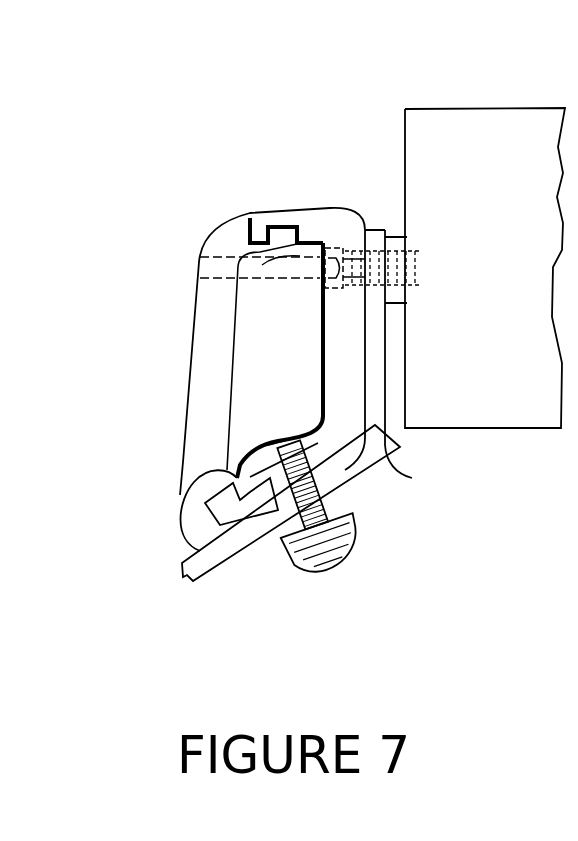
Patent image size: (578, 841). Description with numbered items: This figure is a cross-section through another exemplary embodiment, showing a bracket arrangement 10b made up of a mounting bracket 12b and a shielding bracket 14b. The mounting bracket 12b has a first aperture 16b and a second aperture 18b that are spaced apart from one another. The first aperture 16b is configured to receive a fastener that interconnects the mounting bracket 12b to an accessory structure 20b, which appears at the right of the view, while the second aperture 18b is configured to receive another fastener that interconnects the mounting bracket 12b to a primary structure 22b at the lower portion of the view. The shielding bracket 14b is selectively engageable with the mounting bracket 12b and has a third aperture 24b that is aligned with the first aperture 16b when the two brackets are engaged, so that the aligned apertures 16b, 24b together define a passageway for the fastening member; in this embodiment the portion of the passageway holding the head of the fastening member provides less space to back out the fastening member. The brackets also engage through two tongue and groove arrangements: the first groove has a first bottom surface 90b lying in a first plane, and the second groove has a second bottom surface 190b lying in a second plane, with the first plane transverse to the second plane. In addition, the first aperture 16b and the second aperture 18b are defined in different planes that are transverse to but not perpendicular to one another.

The bracket arrangement 10b is at (254, 98).
The mounting bracket 12b is at (334, 437).
The shielding bracket 14b is at (215, 343).
The first aperture 16b is at (359, 259).
The second aperture 18b is at (259, 446).
The accessory structure 20b is at (520, 260).
The primary structure 22b is at (259, 534).
The third aperture 24b is at (262, 265).
The first bottom surface 90b is at (248, 249).
The second bottom surface 190b is at (205, 503).